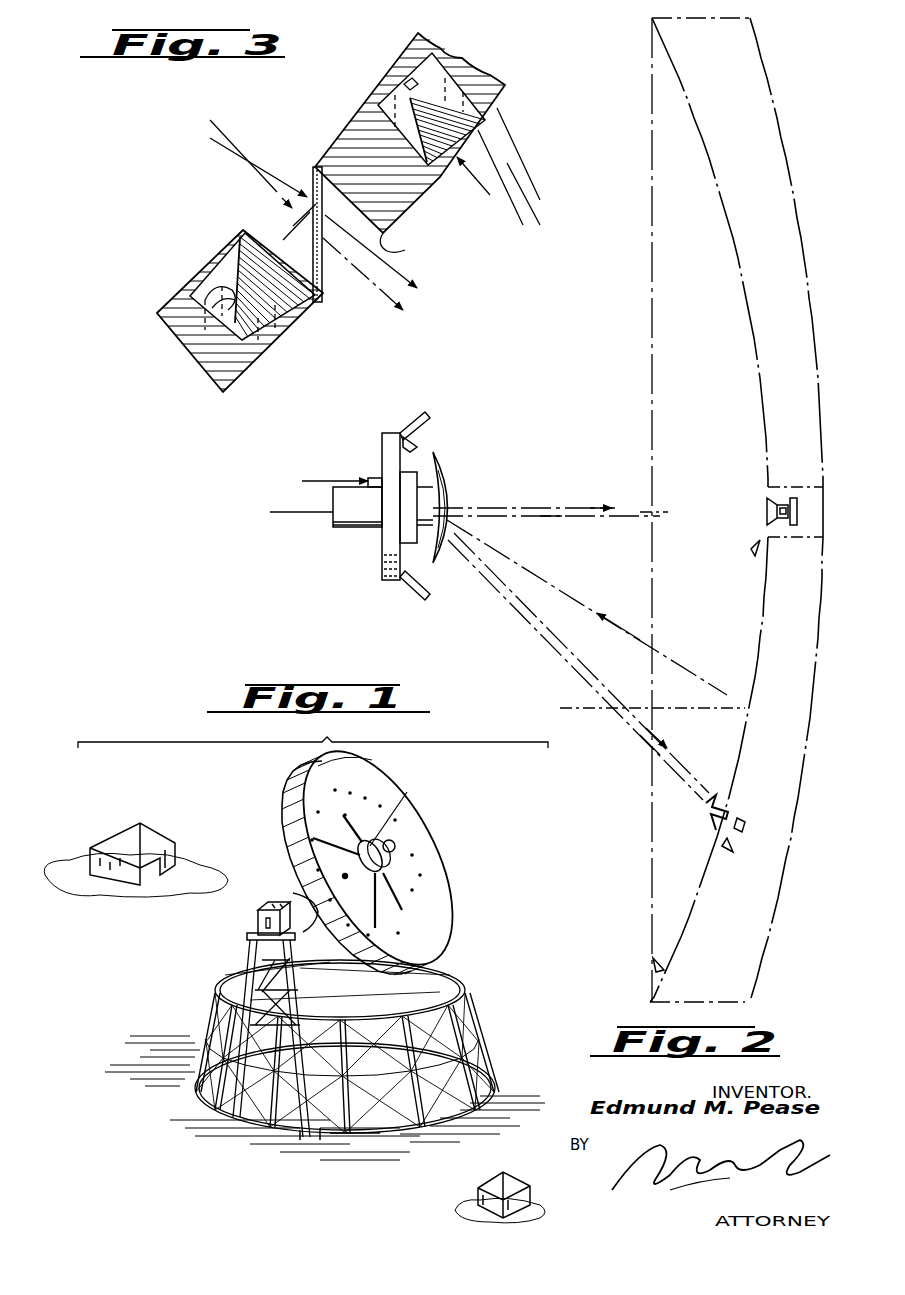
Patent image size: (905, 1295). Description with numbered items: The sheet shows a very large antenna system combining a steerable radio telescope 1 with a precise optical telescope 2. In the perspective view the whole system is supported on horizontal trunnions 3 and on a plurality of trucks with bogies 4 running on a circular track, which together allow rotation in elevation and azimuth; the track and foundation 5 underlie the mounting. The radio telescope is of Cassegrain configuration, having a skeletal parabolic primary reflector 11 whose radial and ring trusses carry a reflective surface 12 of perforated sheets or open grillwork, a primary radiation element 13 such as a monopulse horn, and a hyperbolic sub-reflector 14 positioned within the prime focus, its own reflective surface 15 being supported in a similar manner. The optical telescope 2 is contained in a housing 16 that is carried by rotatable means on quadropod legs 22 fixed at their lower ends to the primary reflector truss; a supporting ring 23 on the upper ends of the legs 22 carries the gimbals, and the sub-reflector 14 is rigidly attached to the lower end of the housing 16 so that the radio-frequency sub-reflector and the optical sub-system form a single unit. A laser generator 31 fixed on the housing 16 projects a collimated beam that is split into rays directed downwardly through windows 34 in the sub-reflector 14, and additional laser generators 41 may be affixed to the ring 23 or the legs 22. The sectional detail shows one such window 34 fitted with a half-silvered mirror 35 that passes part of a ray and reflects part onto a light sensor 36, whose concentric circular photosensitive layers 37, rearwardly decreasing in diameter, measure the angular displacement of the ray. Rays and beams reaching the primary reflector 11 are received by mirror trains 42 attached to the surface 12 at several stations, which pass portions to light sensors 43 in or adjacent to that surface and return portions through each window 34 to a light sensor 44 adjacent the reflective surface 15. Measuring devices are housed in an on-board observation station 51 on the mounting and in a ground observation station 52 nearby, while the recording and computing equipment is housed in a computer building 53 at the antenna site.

In FIG. 1, the steerable radio telescope 1 is at (325, 954).
In FIG. 2, the optical telescope 2 is at (411, 503).
In FIG. 1, the optical telescope 2 is at (406, 858).
In FIG. 1, the horizontal trunnions 3 is at (300, 897).
In FIG. 1, the trucks with bogies 4 is at (195, 1098).
In FIG. 1, the foundation 5 is at (355, 1133).
In FIG. 3, the parabolic primary reflector 11 is at (494, 106).
In FIG. 2, the parabolic primary reflector 11 is at (806, 722).
In FIG. 1, the parabolic primary reflector 11 is at (432, 859).
In FIG. 3, the reflective surface 12 is at (345, 140).
In FIG. 2, the reflective surface 12 is at (758, 633).
In FIG. 1, the reflective surface 12 is at (364, 784).
In FIG. 2, the primary radiation element 13 is at (786, 530).
In FIG. 1, the primary radiation element 13 is at (343, 876).
In FIG. 2, the hyperbolic sub-reflector 14 is at (444, 469).
In FIG. 1, the hyperbolic sub-reflector 14 is at (401, 808).
In FIG. 2, the reflective surface 15 is at (446, 489).
In FIG. 2, the housing 16 is at (356, 530).
In FIG. 1, the housing 16 is at (395, 866).
In FIG. 2, the legs 22 is at (405, 438).
In FIG. 1, the legs 22 is at (395, 902).
In FIG. 2, the supporting ring 23 is at (382, 442).
In FIG. 2, the laser generator 31 is at (370, 478).
In FIG. 3, the windows 34 is at (408, 247).
In FIG. 3, the half-silvered mirror 35 is at (310, 238).
In FIG. 3, the light sensor 36 is at (238, 243).
In FIG. 3, the concentric circular photosensitive layers 37 is at (238, 296).
In FIG. 2, the additional laser generators 41 is at (415, 426).
In FIG. 2, the mirror trains 42 is at (712, 820).
In FIG. 1, the mirror trains 42 is at (413, 925).
In FIG. 2, the light sensors 43 is at (752, 553).
In FIG. 3, the light sensor 44 is at (410, 96).
In FIG. 1, the on-board observation station 51 is at (258, 912).
In FIG. 1, the ground observation station 52 is at (515, 1185).
In FIG. 1, the computer building 53 is at (105, 846).